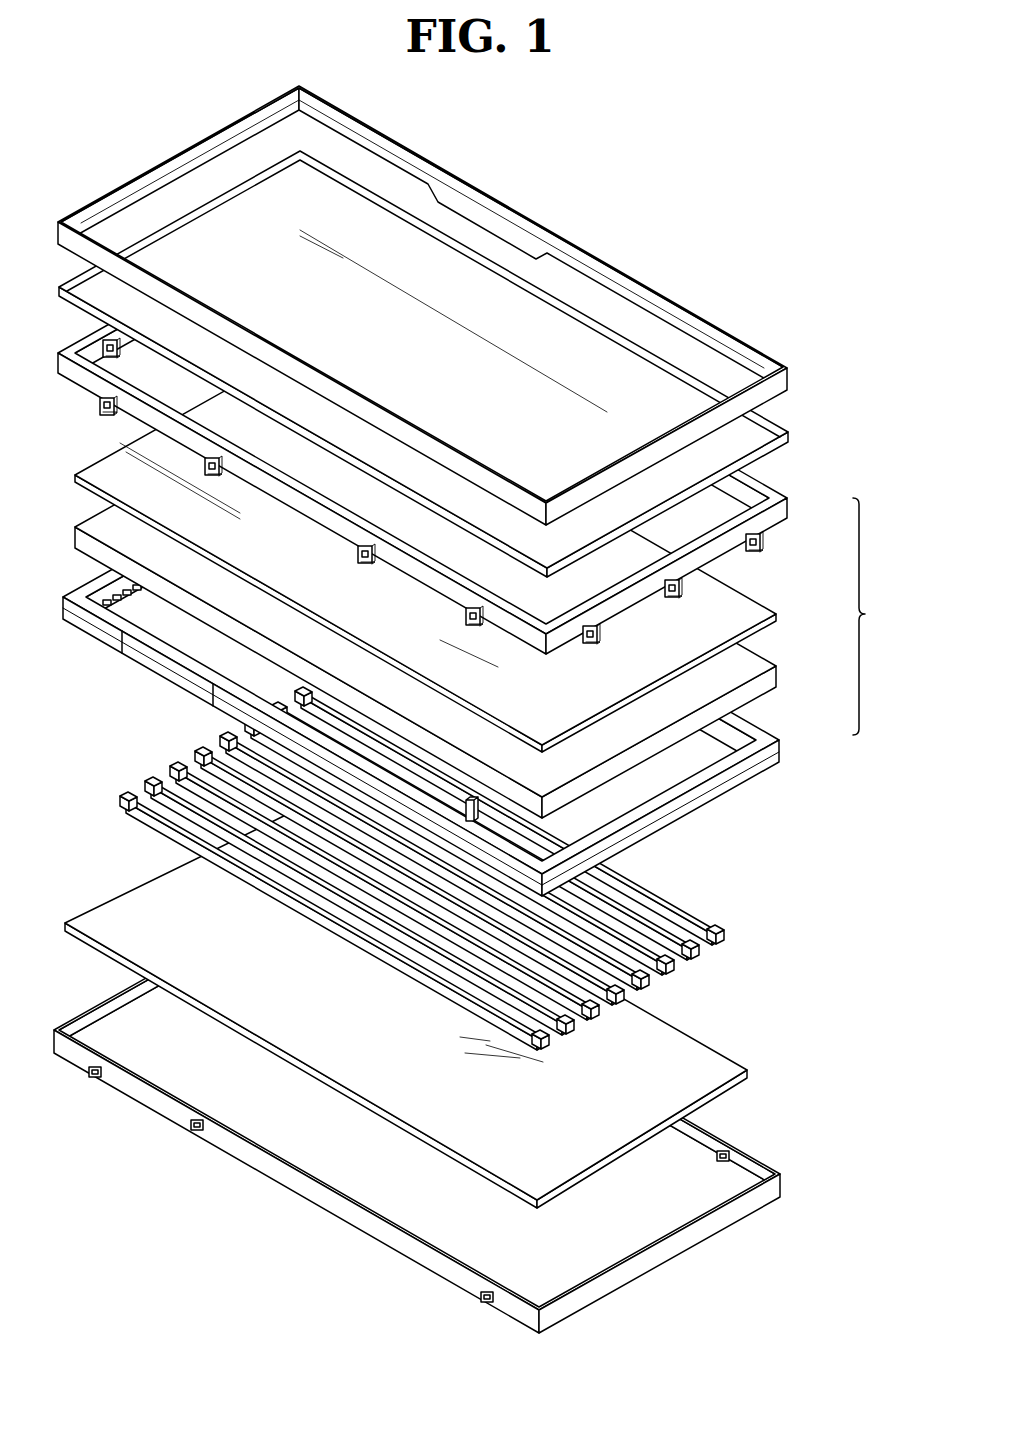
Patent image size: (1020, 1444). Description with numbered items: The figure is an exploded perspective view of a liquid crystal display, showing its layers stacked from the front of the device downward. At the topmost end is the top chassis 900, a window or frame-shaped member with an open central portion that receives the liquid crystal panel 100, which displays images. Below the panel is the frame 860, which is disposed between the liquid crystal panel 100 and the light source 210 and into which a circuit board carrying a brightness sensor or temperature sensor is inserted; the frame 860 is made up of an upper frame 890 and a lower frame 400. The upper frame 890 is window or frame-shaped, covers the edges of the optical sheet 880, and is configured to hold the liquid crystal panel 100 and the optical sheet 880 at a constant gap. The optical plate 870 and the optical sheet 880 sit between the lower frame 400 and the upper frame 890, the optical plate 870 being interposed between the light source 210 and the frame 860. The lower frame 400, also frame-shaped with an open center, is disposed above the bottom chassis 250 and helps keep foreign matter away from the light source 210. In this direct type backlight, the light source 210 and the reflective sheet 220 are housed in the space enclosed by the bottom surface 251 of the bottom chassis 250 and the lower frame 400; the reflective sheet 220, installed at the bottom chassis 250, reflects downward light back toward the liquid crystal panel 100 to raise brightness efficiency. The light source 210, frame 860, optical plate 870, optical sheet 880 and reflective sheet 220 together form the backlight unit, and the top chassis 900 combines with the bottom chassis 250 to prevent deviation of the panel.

The top chassis 900 is at (786, 381).
The liquid crystal panel 100 is at (778, 431).
The upper frame 890 is at (784, 492).
The optical sheet 880 is at (776, 611).
The optical plate 870 is at (776, 665).
The frame 860 is at (864, 614).
The lower frame 400 is at (781, 736).
The light source 210 is at (682, 926).
The reflective sheet 220 is at (687, 1065).
The bottom surface 251 is at (723, 1187).
The bottom chassis 250 is at (453, 1113).